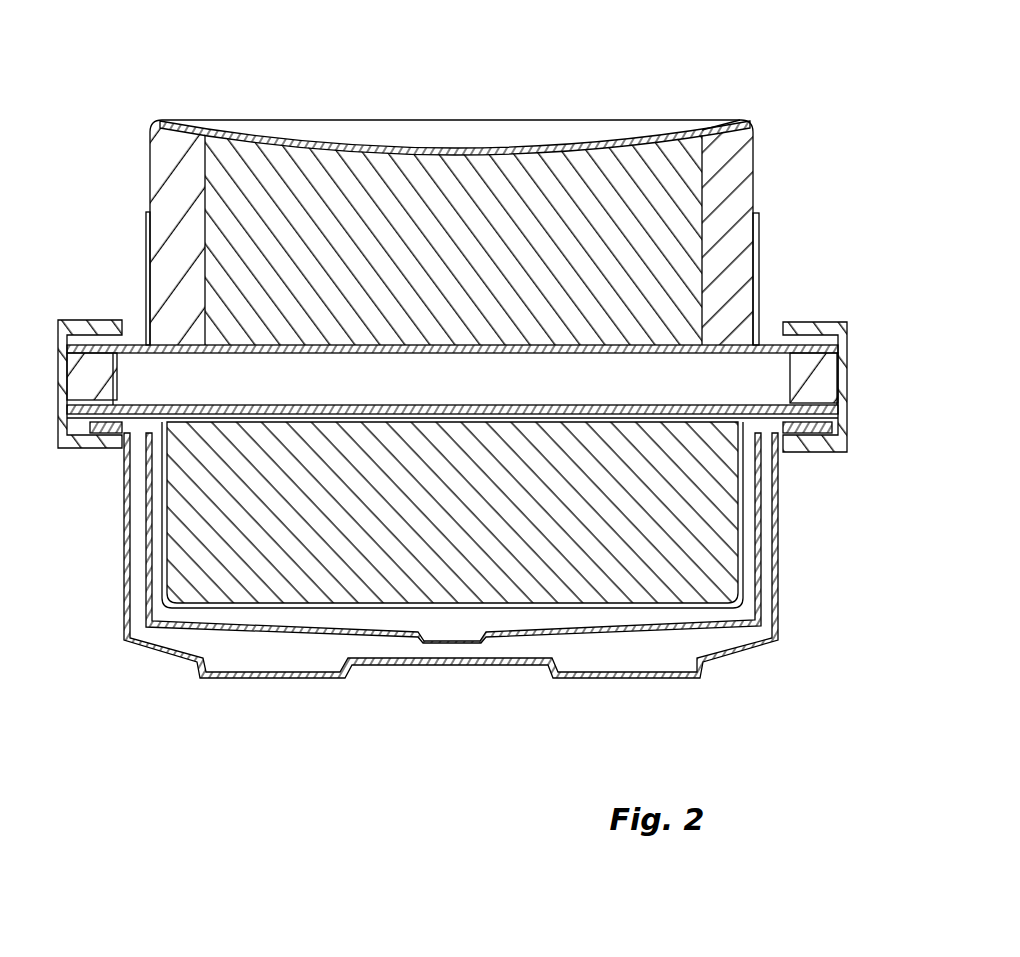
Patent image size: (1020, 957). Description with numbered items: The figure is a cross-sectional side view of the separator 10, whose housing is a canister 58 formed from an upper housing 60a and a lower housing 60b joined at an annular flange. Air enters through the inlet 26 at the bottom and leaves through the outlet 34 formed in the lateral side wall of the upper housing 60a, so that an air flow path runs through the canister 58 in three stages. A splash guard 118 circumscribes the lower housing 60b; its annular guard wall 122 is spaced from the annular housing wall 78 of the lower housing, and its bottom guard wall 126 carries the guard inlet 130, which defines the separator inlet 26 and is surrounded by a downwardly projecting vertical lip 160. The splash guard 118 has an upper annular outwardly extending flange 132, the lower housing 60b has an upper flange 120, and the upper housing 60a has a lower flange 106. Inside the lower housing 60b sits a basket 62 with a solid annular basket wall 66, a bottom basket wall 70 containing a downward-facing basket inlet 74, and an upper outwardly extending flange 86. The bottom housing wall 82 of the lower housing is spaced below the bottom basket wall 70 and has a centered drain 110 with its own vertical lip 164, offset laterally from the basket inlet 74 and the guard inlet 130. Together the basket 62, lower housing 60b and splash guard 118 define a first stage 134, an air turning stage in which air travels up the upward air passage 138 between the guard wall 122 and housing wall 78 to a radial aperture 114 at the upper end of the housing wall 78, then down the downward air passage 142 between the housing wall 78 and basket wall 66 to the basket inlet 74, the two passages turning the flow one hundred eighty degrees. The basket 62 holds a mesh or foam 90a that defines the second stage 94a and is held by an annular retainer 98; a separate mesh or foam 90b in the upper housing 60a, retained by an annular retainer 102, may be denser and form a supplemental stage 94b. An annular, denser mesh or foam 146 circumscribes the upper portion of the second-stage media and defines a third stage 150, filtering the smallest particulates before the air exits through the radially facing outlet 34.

The separator 10 is at (506, 98).
The inlet 26 is at (257, 678).
The outlet 34 is at (150, 160).
The canister 58 is at (622, 98).
The upper housing 60a is at (760, 228).
The lower housing 60b is at (757, 517).
The basket 62 is at (735, 592).
The annular basket wall 66 is at (733, 545).
The bottom basket wall 70 is at (508, 604).
The basket inlet 74 is at (600, 604).
The annular housing wall 78 is at (755, 565).
The bottom housing wall 82 is at (567, 632).
The upper annular outwardly extending flange 86 is at (755, 423).
The mesh or foam 90a is at (205, 568).
The mesh or foam 90b is at (305, 165).
The second stage 94a is at (247, 580).
The supplemental stage 94b is at (354, 180).
The annular retainer 98 is at (708, 420).
The annular retainer 102 is at (226, 343).
The lower annular outwardly extending flange 106 is at (126, 343).
The drain 110 is at (440, 643).
The radial aperture 114 is at (150, 469).
The splash guard 118 is at (157, 578).
The upper annular outwardly extending flange 120 is at (775, 427).
The annular guard wall 122 is at (132, 518).
The bottom guard wall 126 is at (487, 661).
The guard inlet 130 is at (221, 678).
The upper annular outwardly extending flange 132 is at (97, 320).
The first stage 134 is at (120, 630).
The upward air passage 138 is at (125, 535).
The downward air passage 142 is at (95, 626).
The annular denser mesh or foam 146 is at (730, 144).
The third stage 150 is at (738, 168).
The vertical lip 160 is at (349, 666).
The vertical lip 164 is at (420, 640).